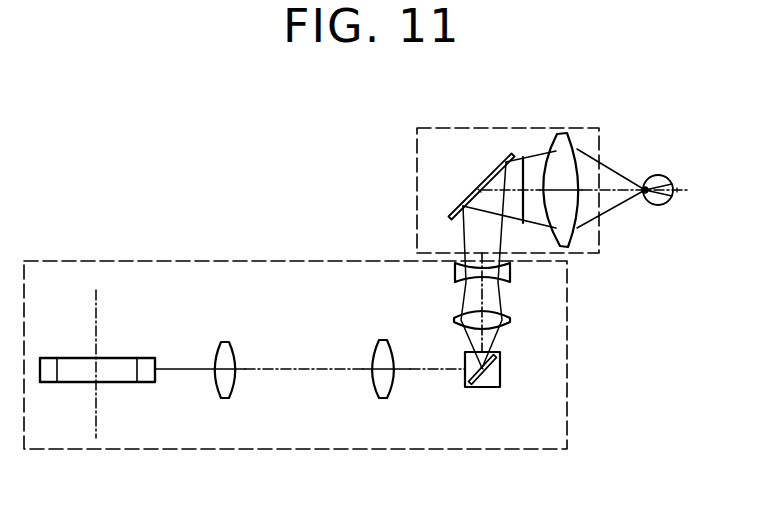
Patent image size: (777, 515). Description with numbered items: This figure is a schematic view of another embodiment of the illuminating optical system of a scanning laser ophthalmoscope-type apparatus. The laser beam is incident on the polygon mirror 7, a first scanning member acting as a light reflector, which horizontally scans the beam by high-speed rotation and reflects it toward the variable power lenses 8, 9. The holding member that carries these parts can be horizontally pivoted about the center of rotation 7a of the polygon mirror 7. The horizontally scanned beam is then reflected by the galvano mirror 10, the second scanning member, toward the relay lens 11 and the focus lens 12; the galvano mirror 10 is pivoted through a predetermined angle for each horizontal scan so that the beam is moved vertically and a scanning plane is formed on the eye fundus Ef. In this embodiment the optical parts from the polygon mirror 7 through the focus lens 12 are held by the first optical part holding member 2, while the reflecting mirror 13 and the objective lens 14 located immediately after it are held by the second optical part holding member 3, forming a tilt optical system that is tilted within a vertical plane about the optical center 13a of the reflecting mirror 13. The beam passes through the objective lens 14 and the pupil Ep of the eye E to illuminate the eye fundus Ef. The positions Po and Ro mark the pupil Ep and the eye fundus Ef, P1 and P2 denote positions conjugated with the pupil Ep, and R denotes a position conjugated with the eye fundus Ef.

The first optical part holding member 2 is at (122, 450).
The second optical part holding member 3 is at (600, 243).
The polygon mirror 7 is at (137, 358).
The center of rotation of the polygon mirror 7a is at (95, 421).
The variable power lens 8 is at (222, 342).
The variable power lens 9 is at (383, 340).
The galvano mirror 10 is at (478, 388).
The relay lens 11 is at (510, 320).
The focus lens 12 is at (512, 273).
The reflecting mirror 13 is at (502, 160).
The optical center of the reflecting mirror 13a is at (479, 189).
The objective lens 14 is at (565, 133).
The position conjugated with the eye fundus R is at (527, 150).
The eye E is at (673, 198).
The eye fundus Ef is at (672, 182).
The pupil Ep is at (645, 200).
The position of the pupil Po is at (647, 163).
The position of the eye fundus Ro is at (677, 164).
The position conjugated with the pupil P1 is at (513, 368).
The position conjugated with the pupil P2 is at (158, 381).